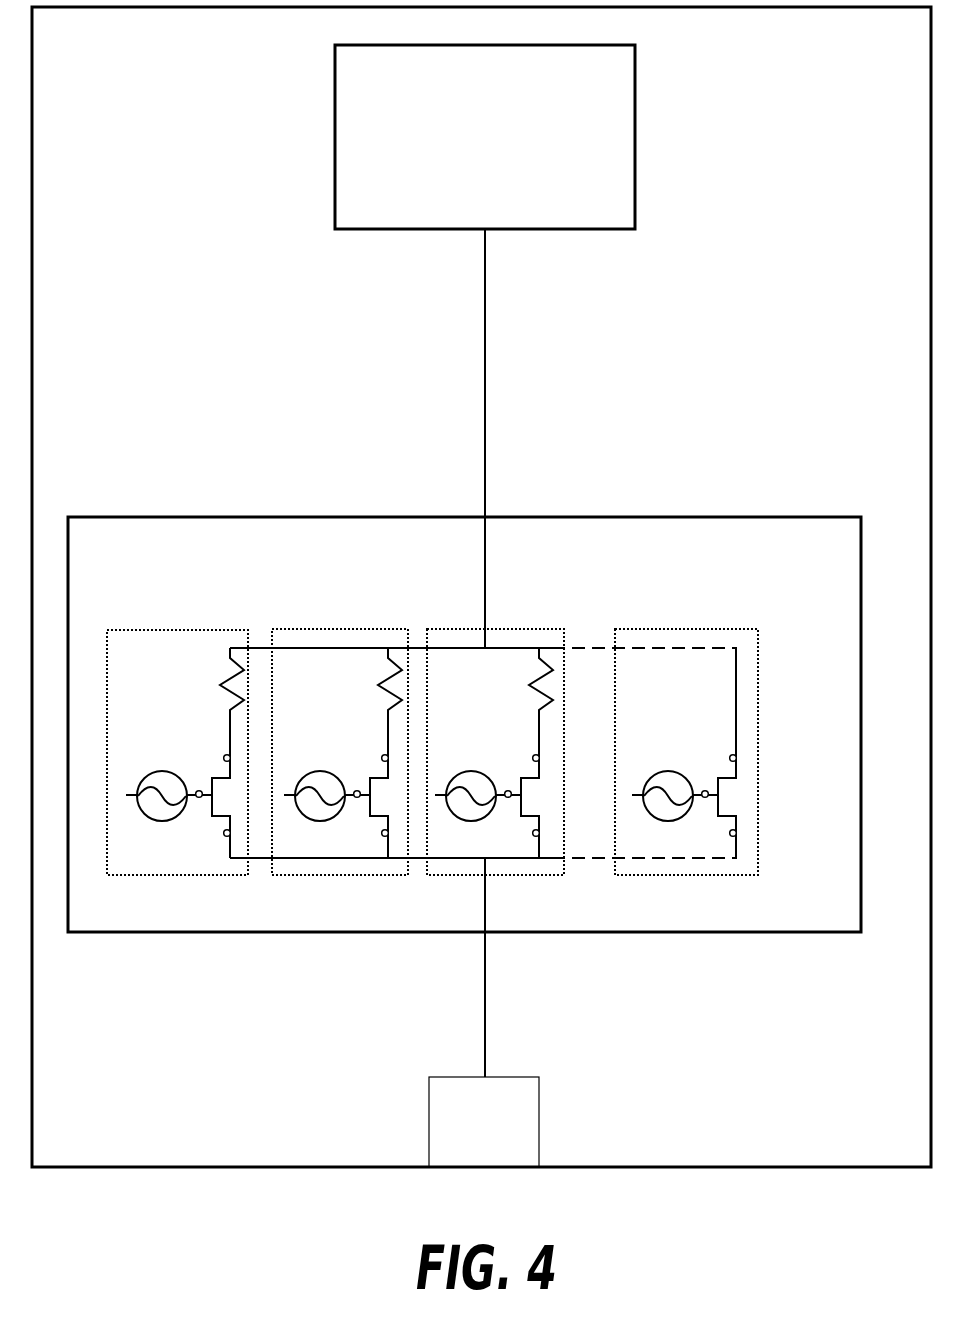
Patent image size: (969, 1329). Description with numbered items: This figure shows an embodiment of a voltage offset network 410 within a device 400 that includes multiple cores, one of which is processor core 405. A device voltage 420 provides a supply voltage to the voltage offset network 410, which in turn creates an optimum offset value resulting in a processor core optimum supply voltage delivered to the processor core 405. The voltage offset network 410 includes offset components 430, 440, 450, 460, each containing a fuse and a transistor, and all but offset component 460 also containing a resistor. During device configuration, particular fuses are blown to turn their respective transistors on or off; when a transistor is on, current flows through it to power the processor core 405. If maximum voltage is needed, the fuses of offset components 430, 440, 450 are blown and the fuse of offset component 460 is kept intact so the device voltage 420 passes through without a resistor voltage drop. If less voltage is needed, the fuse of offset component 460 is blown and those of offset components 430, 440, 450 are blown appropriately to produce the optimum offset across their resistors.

The device 400 is at (147, 83).
The processor core 405 is at (502, 163).
The voltage offset network 410 is at (173, 613).
The device voltage 420 is at (500, 1162).
The offset component 430 is at (187, 875).
The offset component 440 is at (352, 875).
The offset component 450 is at (503, 875).
The offset component 460 is at (686, 875).